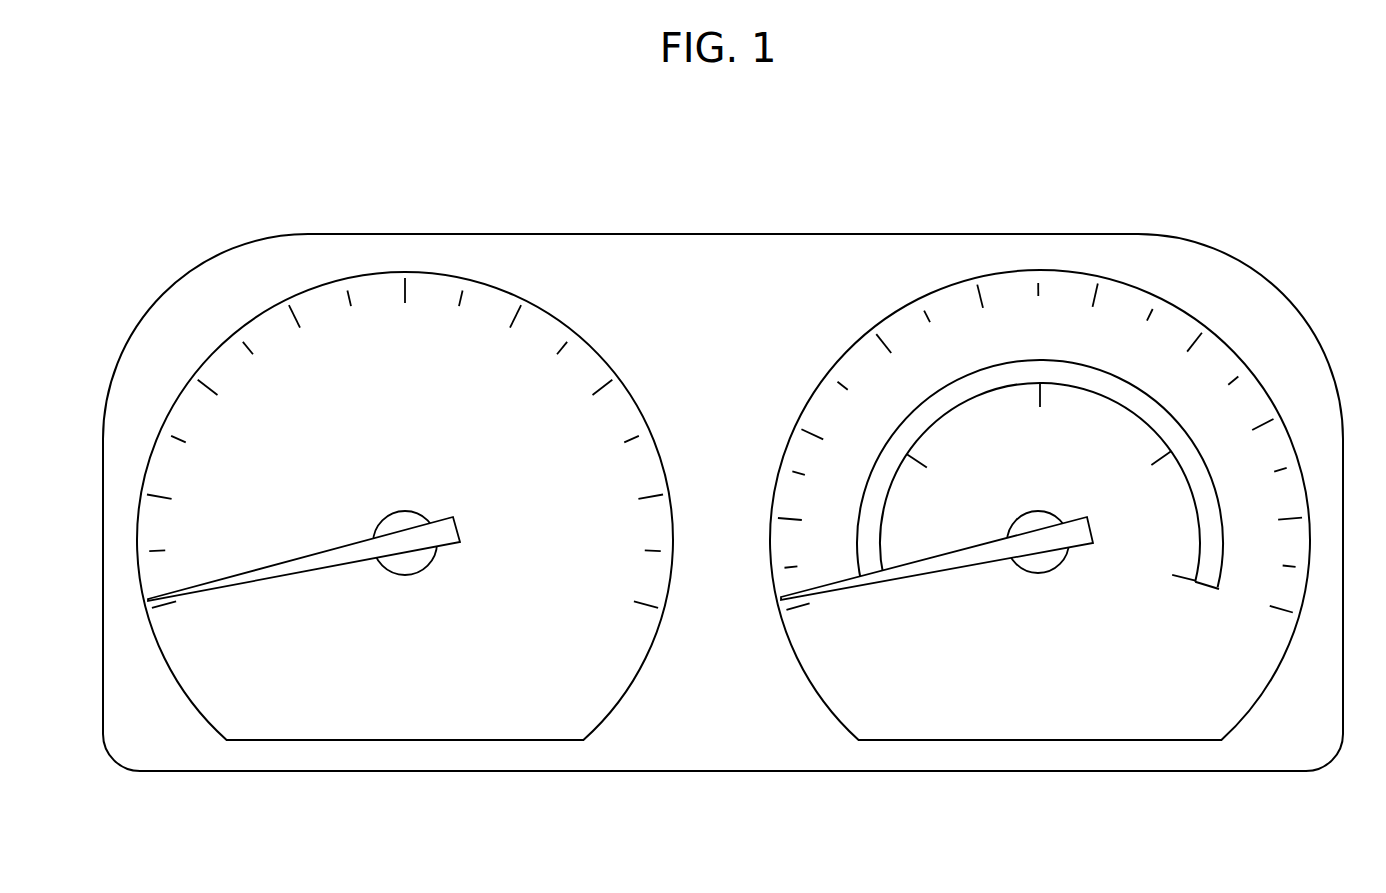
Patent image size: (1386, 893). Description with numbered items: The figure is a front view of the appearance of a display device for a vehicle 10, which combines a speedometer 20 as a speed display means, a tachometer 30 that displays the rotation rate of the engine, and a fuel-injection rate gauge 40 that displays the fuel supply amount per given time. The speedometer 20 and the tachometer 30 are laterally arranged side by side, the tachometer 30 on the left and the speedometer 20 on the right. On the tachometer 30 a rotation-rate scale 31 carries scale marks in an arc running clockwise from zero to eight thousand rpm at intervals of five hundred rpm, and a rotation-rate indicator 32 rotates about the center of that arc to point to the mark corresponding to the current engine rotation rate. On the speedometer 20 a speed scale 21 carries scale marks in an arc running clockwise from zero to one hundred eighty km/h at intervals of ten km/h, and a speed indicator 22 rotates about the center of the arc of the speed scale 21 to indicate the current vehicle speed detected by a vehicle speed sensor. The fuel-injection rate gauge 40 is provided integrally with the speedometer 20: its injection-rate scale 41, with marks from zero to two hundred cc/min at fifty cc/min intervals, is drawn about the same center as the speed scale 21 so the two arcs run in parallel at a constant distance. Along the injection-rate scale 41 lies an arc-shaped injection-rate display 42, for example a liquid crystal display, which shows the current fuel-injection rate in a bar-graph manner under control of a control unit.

The display device for a vehicle 10 is at (726, 773).
The speedometer 20 is at (1051, 270).
The speed scale 21 is at (925, 317).
The speed indicator 22 is at (972, 565).
The tachometer 30 is at (438, 270).
The rotation-rate scale 31 is at (655, 490).
The rotation-rate indicator 32 is at (342, 566).
The fuel-injection rate gauge 40 is at (1012, 475).
The injection-rate scale 41 is at (913, 443).
The injection-rate display 42 is at (873, 548).